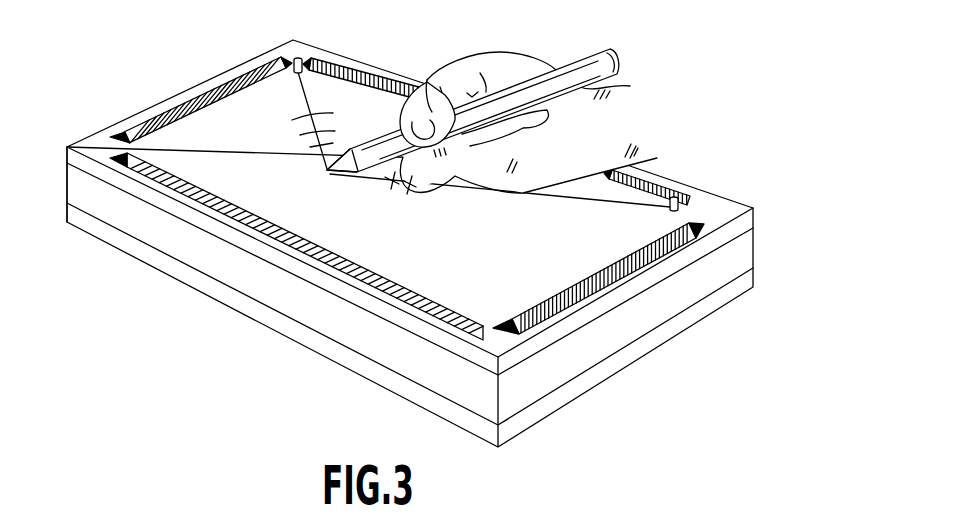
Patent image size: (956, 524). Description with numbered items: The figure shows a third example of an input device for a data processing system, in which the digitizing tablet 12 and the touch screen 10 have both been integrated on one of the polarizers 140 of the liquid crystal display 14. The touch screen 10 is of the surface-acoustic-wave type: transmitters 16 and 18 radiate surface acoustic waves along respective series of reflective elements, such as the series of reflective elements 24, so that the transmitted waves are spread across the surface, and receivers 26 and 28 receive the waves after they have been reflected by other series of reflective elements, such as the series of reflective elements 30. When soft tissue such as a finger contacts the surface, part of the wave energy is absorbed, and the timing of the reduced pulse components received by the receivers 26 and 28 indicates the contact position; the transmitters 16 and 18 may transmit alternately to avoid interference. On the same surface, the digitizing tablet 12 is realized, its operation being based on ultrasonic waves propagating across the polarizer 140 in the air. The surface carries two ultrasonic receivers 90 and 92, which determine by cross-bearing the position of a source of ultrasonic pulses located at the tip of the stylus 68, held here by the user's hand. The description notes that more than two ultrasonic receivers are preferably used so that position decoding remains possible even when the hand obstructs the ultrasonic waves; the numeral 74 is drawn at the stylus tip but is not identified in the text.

The touch screen 10 is at (207, 80).
The digitizing tablet 12 is at (227, 53).
The liquid crystal display (LCD) 14 is at (55, 145).
The polarizer 140 is at (69, 145).
The transmitter 16 is at (120, 128).
The transmitter 18 is at (366, 59).
The series of reflective elements 24 is at (371, 75).
The receiver 26 is at (596, 288).
The receiver 28 is at (147, 159).
The series of reflective elements 30 is at (647, 253).
The stylus 68 is at (473, 115).
The stylus tip 74 is at (343, 177).
The ultrasonic receiver 90 is at (296, 57).
The ultrasonic receiver 92 is at (681, 204).